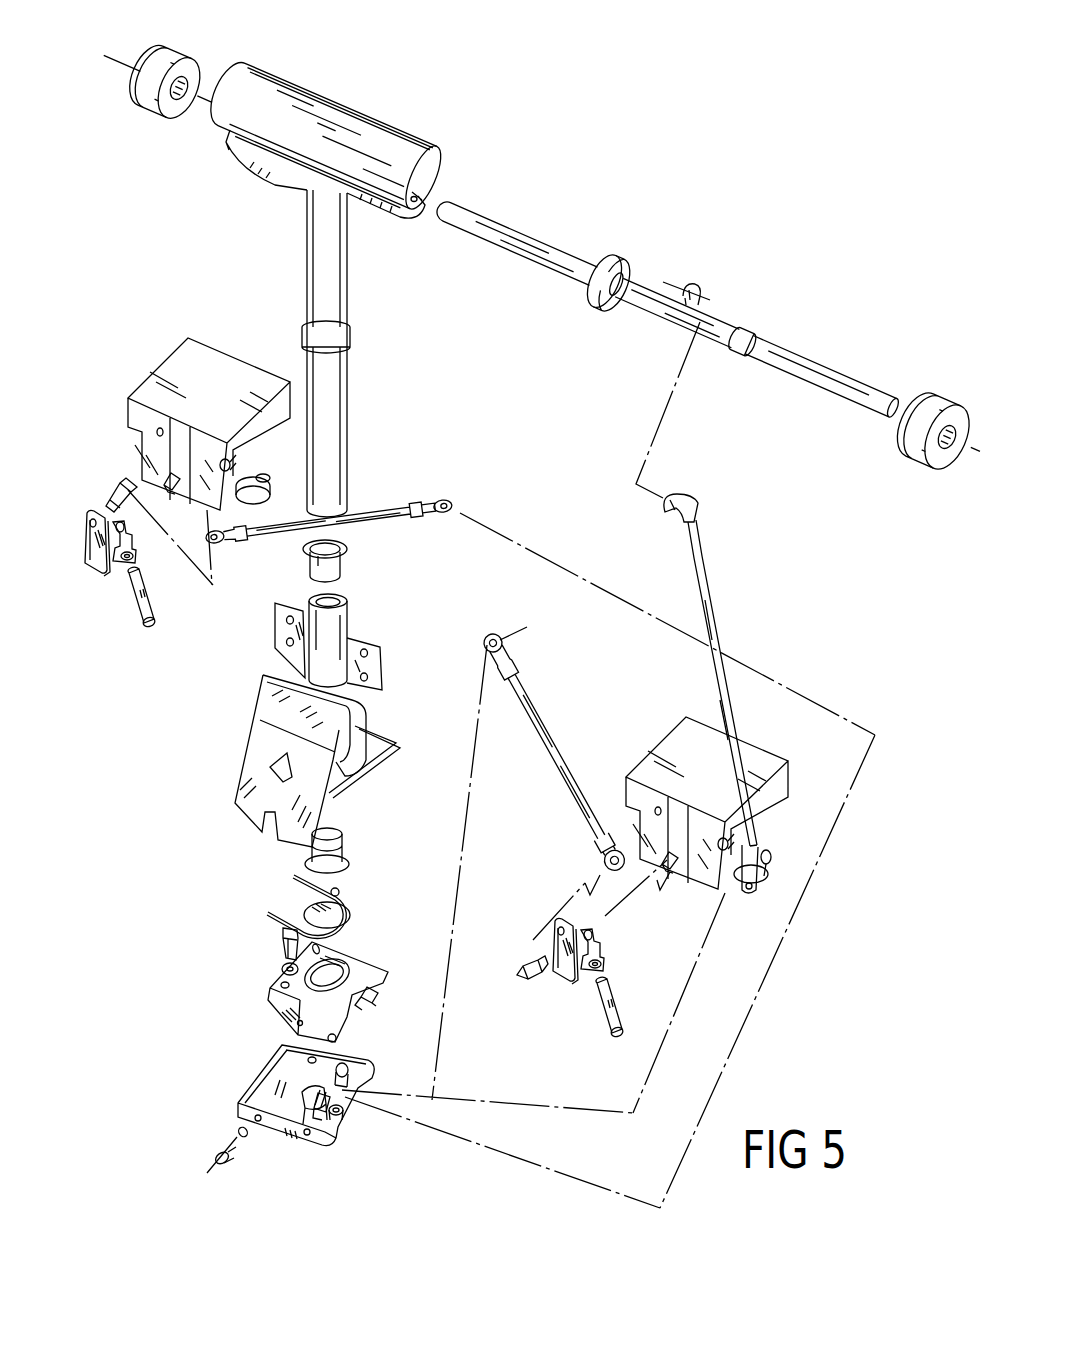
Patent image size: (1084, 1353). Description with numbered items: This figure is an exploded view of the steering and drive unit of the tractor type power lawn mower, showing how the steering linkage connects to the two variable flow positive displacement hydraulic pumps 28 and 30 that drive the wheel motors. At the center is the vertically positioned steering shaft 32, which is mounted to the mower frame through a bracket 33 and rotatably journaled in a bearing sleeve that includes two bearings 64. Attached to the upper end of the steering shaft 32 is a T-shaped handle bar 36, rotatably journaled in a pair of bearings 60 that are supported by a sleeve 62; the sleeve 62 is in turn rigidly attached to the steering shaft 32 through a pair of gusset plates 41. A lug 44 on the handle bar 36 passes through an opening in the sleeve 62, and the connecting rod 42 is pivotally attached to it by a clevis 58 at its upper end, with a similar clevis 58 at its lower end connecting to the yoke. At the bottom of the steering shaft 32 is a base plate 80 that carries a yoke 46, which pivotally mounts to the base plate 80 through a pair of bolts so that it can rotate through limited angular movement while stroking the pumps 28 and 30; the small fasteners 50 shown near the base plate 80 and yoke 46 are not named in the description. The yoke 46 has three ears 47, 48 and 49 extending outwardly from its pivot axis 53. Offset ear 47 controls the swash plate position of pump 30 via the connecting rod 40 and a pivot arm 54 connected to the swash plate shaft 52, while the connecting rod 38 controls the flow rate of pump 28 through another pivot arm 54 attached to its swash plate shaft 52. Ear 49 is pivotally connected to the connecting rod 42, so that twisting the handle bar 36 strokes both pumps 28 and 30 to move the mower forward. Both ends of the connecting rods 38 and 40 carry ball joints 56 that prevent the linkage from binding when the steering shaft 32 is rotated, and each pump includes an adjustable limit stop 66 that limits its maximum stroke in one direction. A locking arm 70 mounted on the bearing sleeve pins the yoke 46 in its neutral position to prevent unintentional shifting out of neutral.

The variable flow positive displacement hydraulic pump 28 is at (747, 752).
The variable flow positive displacement hydraulic pump 30 is at (208, 355).
The steering shaft 32 is at (315, 268).
The bracket 33 is at (338, 620).
The T-shaped handle bar 36 is at (786, 323).
The connecting rod 38 is at (543, 727).
The connecting rod 40 is at (393, 510).
The gusset plate 41 is at (258, 152).
The connecting rod 42 is at (707, 603).
The lug 44 is at (700, 287).
The yoke 46 is at (252, 1056).
The ear 47 is at (333, 1063).
The ear 48 is at (275, 1132).
The ear 49 is at (347, 1093).
The bolt 50 is at (367, 1002).
The swash plate shaft 52 is at (170, 487).
The pivot axis 53 is at (397, 922).
The pivot arm 54 is at (90, 567).
The ball joint 56 is at (120, 485).
The clevis 58 is at (672, 482).
The bearing 60 is at (177, 55).
The sleeve 62 is at (282, 80).
The bearing 64 is at (347, 562).
The adjustable limit stop 66 is at (150, 597).
The locking arm 70 is at (387, 737).
The base plate 80 is at (373, 973).